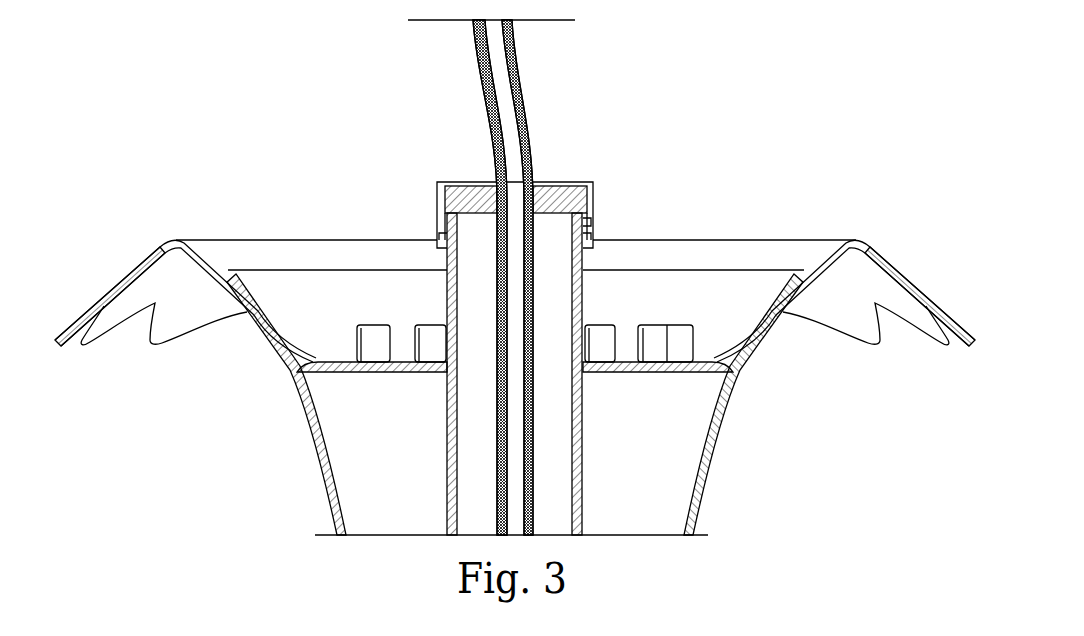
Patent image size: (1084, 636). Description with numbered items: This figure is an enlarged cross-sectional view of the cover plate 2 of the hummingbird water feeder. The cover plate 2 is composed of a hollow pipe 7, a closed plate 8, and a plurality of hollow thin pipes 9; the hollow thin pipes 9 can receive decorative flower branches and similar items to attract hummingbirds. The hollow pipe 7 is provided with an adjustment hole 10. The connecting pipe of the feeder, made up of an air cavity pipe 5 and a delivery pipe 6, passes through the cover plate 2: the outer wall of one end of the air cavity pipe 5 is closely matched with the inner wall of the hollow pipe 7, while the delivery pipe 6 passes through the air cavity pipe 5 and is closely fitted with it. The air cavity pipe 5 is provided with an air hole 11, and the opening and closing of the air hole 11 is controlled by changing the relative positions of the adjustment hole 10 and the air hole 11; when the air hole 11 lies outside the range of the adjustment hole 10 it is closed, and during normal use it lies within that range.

The cover plate 2 is at (640, 292).
The air cavity pipe 5 is at (475, 238).
The delivery pipe 6 is at (510, 175).
The hollow pipe 7 is at (593, 195).
The closed plate 8 is at (623, 372).
The hollow thin pipe 9 is at (678, 343).
The adjustment hole 10 is at (575, 232).
The air hole 11 is at (588, 218).